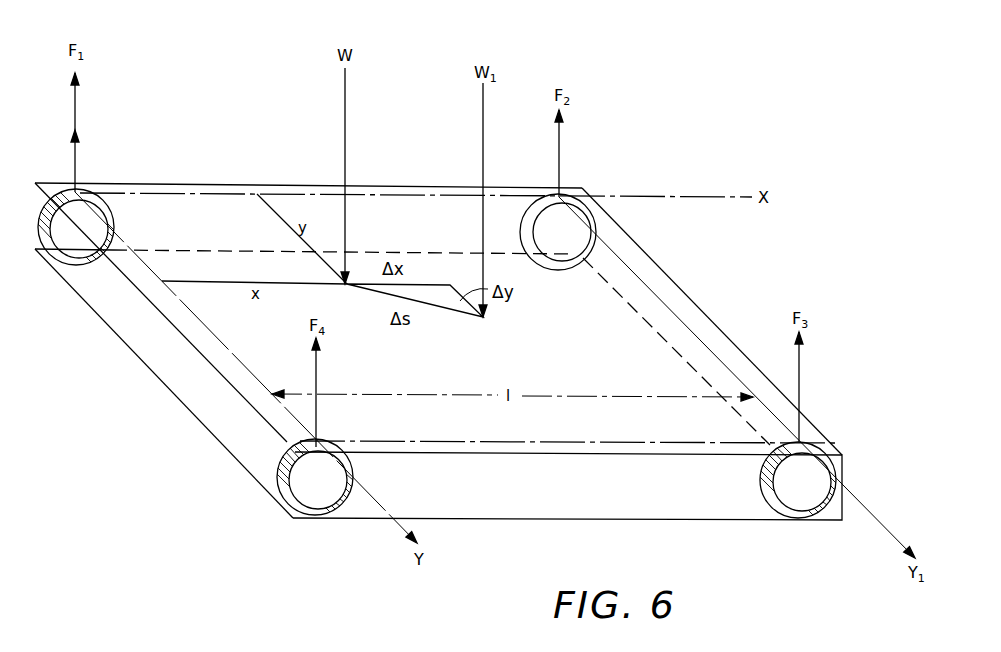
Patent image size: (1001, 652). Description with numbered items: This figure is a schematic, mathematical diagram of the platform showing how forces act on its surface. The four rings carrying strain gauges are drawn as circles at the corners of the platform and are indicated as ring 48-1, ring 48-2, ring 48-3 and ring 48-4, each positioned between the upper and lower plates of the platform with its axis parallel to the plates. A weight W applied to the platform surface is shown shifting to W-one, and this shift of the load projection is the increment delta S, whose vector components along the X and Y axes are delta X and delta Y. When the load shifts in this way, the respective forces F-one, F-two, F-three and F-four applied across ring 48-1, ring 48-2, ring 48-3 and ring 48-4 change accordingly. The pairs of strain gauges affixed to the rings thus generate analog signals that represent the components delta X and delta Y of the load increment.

The ring with strain gauges 48-1 is at (75, 267).
The ring with strain gauges 48-2 is at (560, 271).
The ring with strain gauges 48-3 is at (793, 509).
The ring with strain gauges 48-4 is at (277, 478).